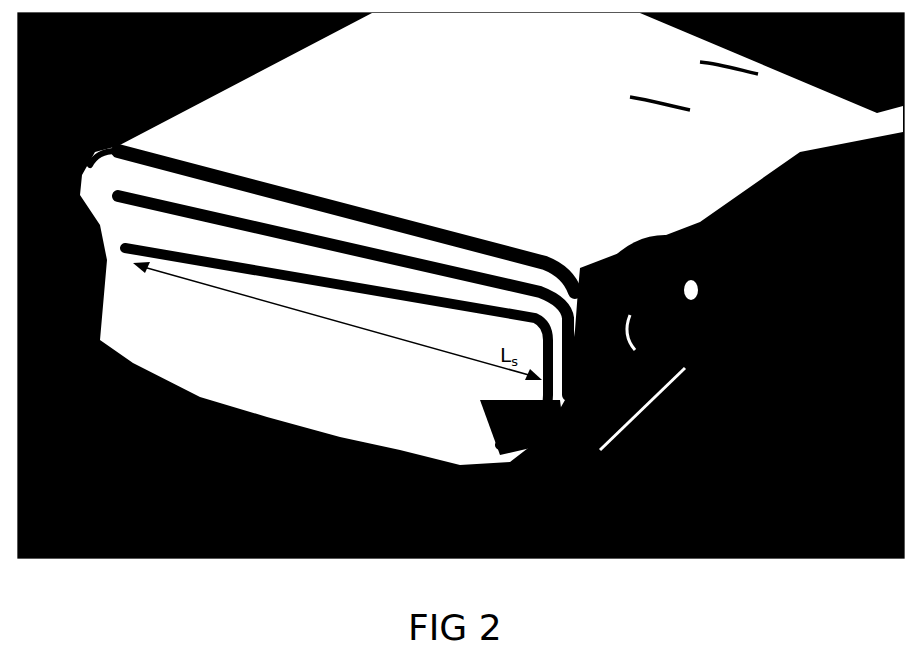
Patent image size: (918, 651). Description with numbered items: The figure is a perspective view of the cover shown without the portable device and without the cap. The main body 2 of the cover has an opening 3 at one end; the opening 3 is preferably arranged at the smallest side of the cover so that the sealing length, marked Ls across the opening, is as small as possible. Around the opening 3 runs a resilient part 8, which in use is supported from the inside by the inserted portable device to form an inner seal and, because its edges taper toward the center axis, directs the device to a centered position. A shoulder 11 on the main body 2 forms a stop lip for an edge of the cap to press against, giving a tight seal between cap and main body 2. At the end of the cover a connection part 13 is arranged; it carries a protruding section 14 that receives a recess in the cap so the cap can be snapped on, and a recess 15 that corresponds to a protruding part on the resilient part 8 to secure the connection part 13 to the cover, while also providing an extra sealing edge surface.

The main body of the cover 2 is at (491, 239).
The opening 3 is at (170, 318).
The resilient part 8 is at (112, 150).
The shoulder 11 is at (505, 240).
The connection part 13 is at (677, 343).
The protruding section 14 is at (640, 328).
The recess 15 is at (692, 300).